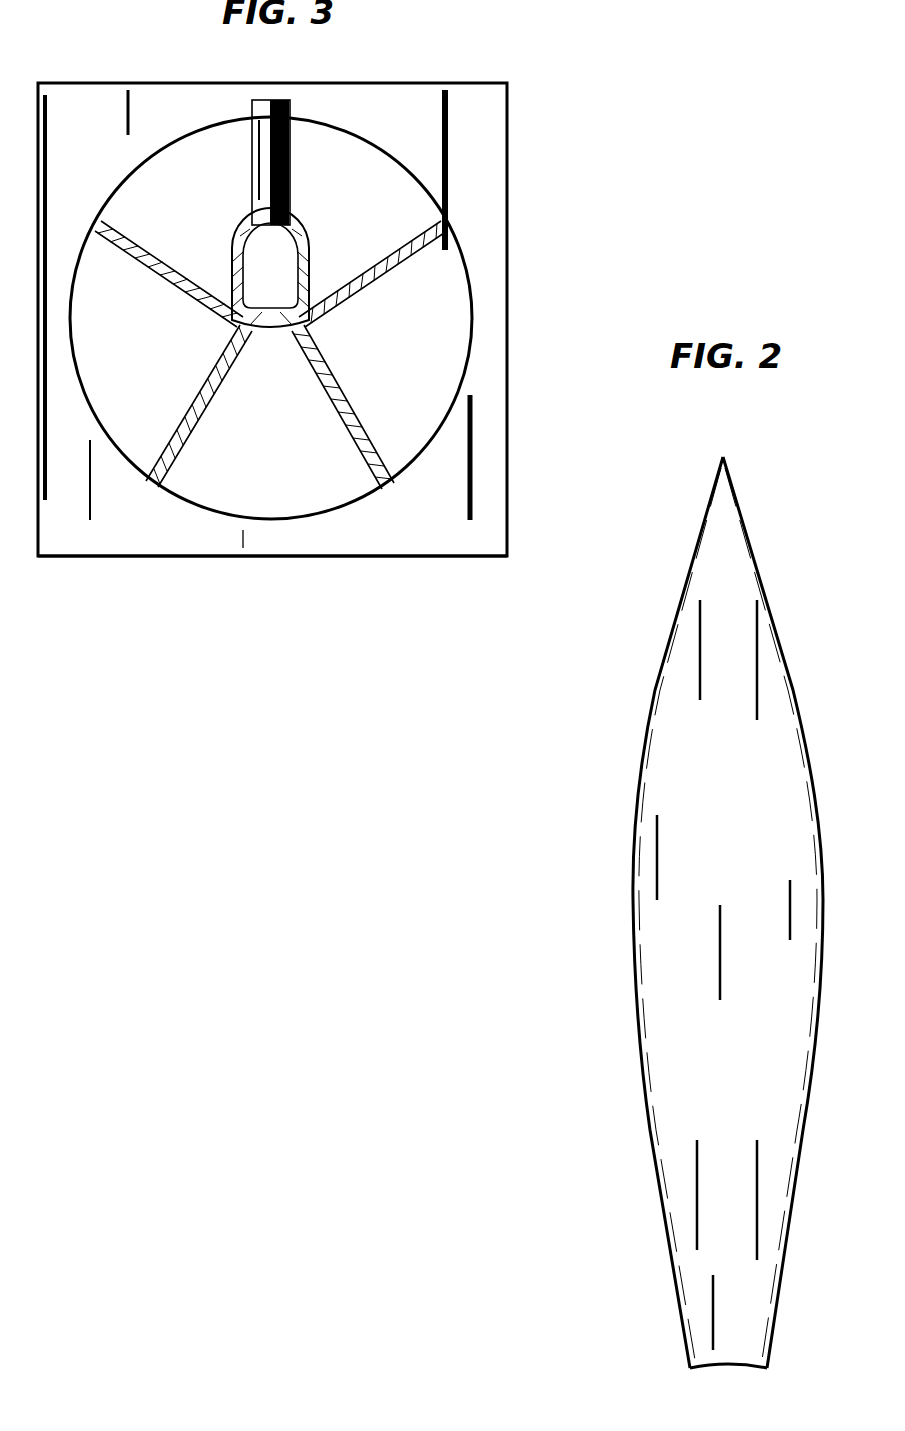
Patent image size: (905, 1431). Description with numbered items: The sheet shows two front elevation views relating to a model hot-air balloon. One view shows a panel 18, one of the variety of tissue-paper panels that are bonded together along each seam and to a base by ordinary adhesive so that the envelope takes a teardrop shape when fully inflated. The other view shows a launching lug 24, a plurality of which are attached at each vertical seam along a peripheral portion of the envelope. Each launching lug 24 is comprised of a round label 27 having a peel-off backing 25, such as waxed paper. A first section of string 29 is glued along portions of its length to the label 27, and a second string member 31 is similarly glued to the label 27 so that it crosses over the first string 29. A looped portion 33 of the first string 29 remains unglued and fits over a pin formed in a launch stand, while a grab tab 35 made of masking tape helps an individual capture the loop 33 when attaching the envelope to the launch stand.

In FIG. 2, the panel 18 is at (631, 898).
In FIG. 3, the launching lug 24 is at (508, 249).
In FIG. 3, the peel-off backing 25 is at (148, 557).
In FIG. 3, the round label 27 is at (465, 385).
In FIG. 3, the first section of string 29 is at (200, 432).
In FIG. 3, the second string member 31 is at (150, 262).
In FIG. 3, the looped portion 33 is at (312, 250).
In FIG. 3, the grab tab 35 is at (250, 157).